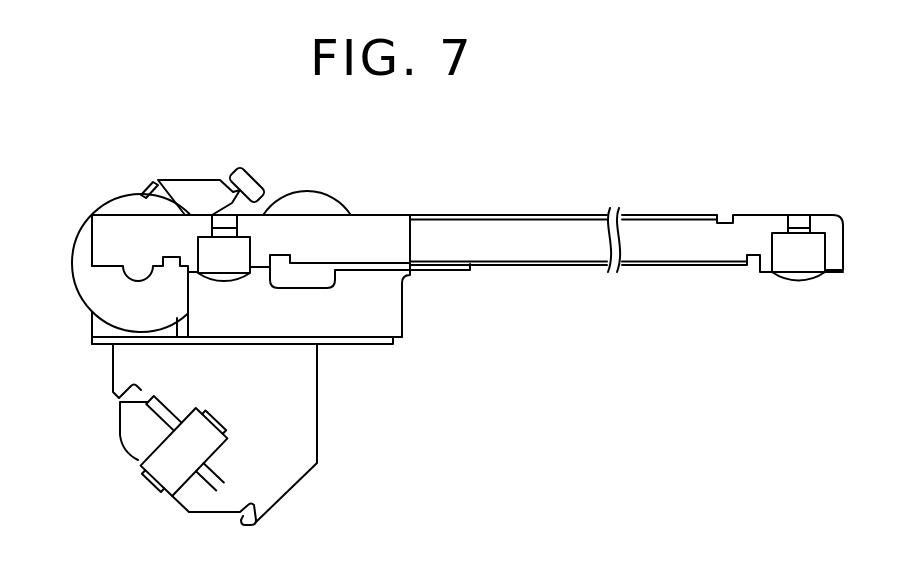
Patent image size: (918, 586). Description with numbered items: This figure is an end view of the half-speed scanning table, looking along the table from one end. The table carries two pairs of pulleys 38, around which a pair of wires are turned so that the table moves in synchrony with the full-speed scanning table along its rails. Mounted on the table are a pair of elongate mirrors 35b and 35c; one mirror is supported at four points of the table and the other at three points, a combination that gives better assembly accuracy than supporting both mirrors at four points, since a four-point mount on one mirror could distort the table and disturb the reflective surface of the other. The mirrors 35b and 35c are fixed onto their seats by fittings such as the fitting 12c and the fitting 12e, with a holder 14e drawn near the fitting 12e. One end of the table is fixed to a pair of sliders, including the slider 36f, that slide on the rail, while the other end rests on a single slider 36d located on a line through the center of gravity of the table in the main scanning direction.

The fitting 12c is at (143, 185).
The fitting 12e is at (162, 448).
The roller holder 14e is at (167, 407).
The elongate mirror 35b is at (195, 180).
The elongate mirror 35c is at (197, 500).
The single slider 36d is at (228, 270).
The slider 36f is at (800, 272).
The pulley 38 is at (301, 192).